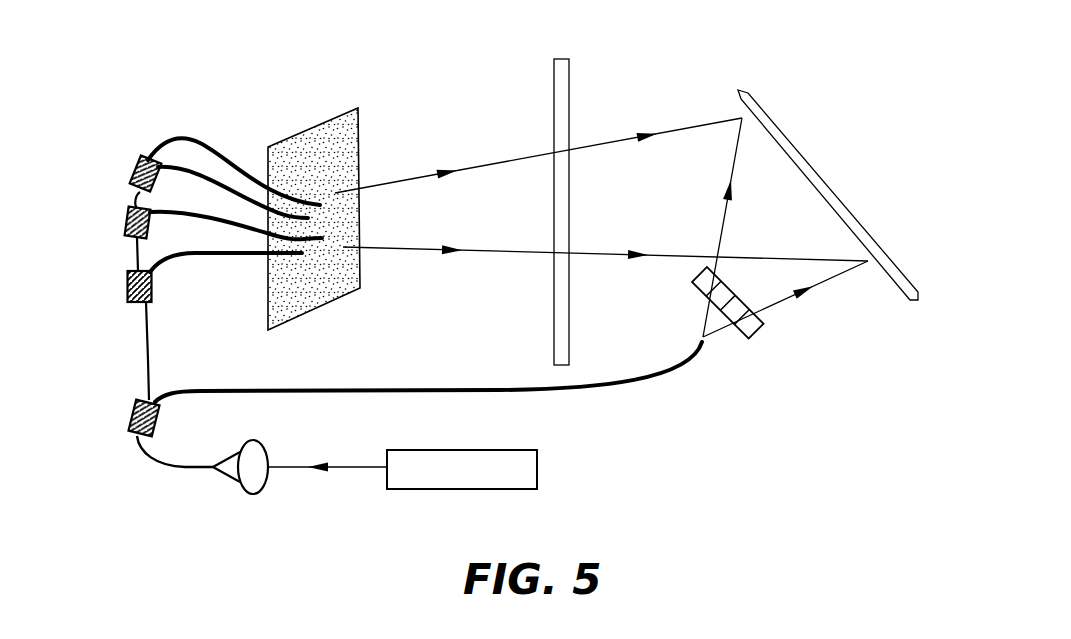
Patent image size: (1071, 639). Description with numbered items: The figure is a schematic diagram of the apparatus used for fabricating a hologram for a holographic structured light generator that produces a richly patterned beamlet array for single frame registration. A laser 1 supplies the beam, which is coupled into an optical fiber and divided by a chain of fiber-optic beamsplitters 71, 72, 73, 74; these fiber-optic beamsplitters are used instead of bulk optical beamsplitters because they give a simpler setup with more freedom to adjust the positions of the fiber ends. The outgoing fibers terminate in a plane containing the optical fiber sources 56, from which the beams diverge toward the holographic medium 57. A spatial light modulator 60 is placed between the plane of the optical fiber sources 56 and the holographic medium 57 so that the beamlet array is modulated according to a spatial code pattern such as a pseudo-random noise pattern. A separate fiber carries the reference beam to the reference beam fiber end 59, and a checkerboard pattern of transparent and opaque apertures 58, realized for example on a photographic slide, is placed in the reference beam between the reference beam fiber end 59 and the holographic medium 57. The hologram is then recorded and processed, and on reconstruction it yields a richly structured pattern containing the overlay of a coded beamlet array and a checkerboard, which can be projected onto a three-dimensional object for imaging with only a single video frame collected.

The laser 1 is at (443, 492).
The optical fiber sources 56 is at (302, 125).
The holographic medium 57 is at (812, 160).
The checkerboard pattern of transparent and opaque apertures 58 is at (760, 337).
The reference beam fiber end 59 is at (707, 340).
The spatial light modulator 60 is at (560, 55).
The fiber-optic beamsplitter 71 is at (157, 423).
The fiber-optic beamsplitter 72 is at (158, 288).
The fiber-optic beamsplitter 73 is at (123, 220).
The fiber-optic beamsplitter 74 is at (135, 167).